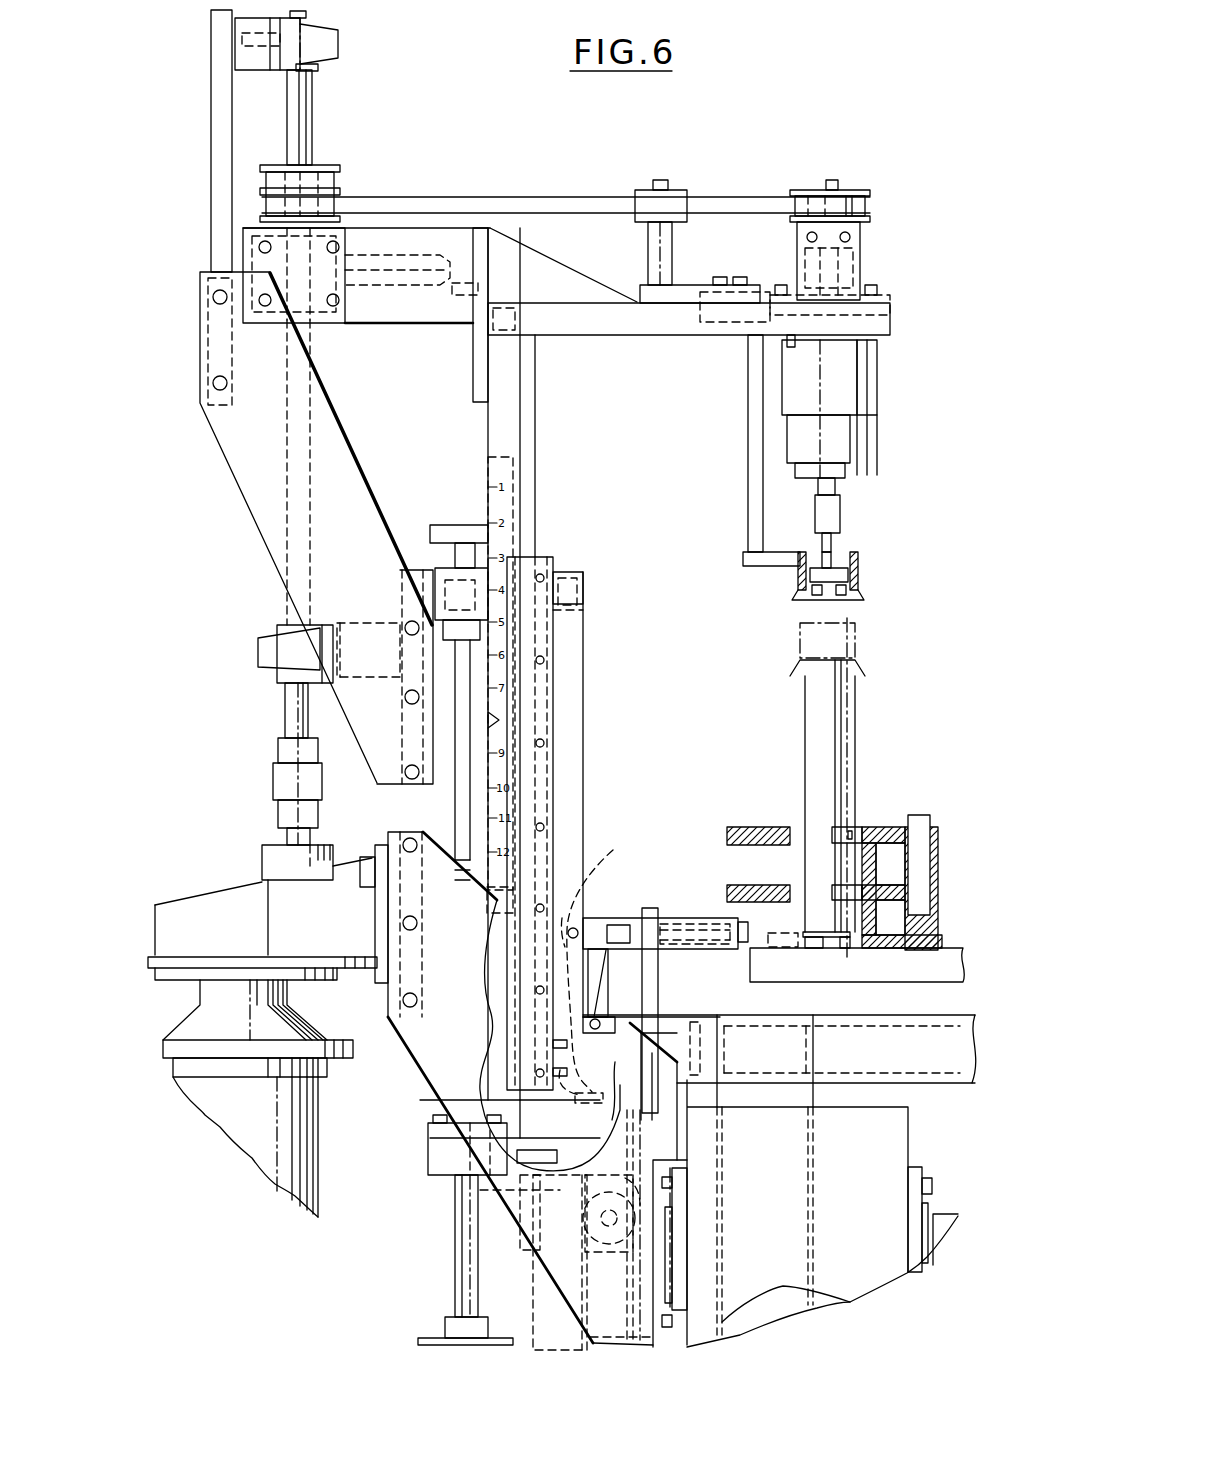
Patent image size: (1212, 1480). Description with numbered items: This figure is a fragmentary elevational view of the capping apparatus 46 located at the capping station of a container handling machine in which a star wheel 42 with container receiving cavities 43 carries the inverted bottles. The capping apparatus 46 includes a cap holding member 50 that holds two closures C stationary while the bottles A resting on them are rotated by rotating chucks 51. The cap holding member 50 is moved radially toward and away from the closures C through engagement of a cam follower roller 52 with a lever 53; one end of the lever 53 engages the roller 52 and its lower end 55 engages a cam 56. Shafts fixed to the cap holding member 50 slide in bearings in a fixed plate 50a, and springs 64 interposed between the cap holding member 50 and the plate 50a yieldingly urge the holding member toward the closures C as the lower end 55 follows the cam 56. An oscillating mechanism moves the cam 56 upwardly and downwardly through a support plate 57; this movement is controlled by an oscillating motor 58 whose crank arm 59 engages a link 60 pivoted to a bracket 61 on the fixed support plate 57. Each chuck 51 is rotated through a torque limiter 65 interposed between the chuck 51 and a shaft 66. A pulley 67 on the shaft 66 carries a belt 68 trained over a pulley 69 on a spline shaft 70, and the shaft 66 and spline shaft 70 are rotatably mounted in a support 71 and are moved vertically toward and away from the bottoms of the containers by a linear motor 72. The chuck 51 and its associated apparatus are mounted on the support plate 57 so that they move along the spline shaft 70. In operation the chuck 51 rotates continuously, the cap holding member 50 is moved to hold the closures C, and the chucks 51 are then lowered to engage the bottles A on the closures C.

The star wheel 42 is at (848, 852).
The container receiving cavities 43 is at (832, 835).
The capping apparatus 46 is at (868, 682).
The cap holding member 50 is at (762, 933).
The fixed plate 50a is at (658, 976).
The rotating chuck 51 is at (860, 570).
The cam follower roller 52 is at (592, 913).
The lever 53 is at (608, 965).
The lower end of lever 55 is at (618, 983).
The cam 56 is at (588, 888).
The support plate 57 is at (438, 1100).
The oscillating motor 58 is at (832, 1290).
The crank arm 59 is at (611, 1241).
The link 60 is at (585, 1272).
The bracket 61 is at (530, 1240).
The springs 64 is at (688, 925).
The torque limiter 65 is at (863, 388).
The shaft 66 is at (857, 188).
The pulley 67 is at (862, 206).
The belt 68 is at (495, 206).
The pulley 69 is at (262, 207).
The spline shaft 70 is at (300, 121).
The support 71 is at (428, 312).
The linear motor 72 is at (313, 1146).
The bottle A is at (848, 753).
The closure C is at (812, 945).